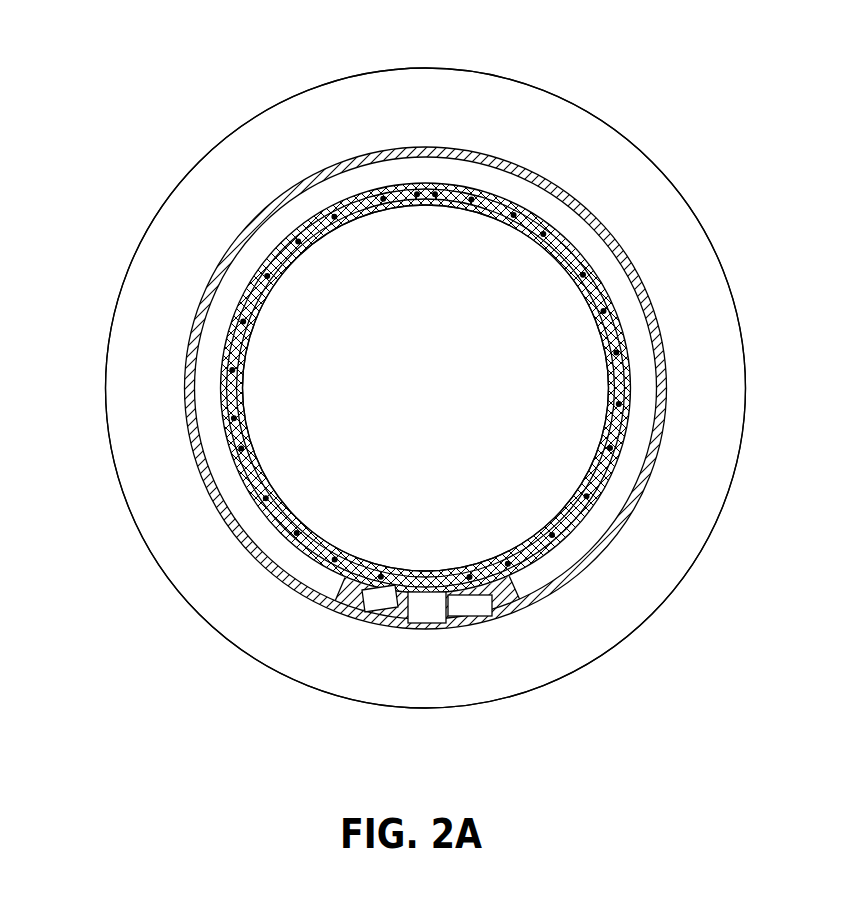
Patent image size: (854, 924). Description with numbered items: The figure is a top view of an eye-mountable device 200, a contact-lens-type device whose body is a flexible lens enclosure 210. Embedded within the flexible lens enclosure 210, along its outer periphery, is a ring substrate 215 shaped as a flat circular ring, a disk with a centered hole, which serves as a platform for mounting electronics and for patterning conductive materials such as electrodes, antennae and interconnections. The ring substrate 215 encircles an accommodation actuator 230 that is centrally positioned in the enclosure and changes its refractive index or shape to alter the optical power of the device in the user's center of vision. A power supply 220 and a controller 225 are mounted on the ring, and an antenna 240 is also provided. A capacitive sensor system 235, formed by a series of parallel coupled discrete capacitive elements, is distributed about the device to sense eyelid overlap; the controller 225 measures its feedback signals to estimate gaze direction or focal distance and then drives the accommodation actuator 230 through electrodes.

The eye-mountable device 200 is at (185, 88).
The flexible lens enclosure 210 is at (148, 560).
The ring substrate 215 is at (615, 542).
The power supply 220 is at (378, 597).
The controller 225 is at (424, 612).
The accommodation actuator 230 is at (383, 348).
The capacitive sensor system 235 is at (610, 303).
The antenna 240 is at (550, 577).